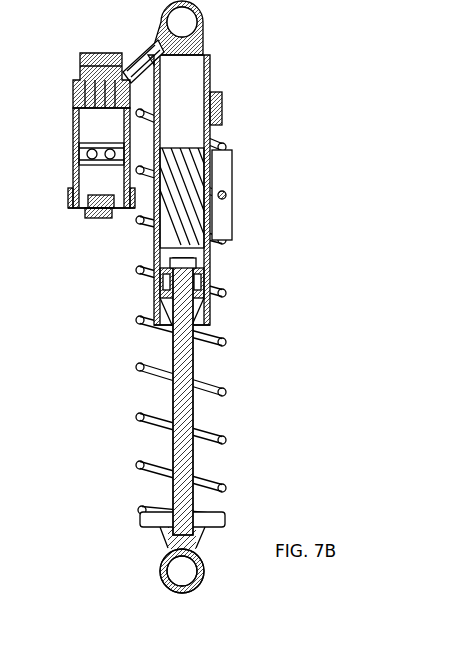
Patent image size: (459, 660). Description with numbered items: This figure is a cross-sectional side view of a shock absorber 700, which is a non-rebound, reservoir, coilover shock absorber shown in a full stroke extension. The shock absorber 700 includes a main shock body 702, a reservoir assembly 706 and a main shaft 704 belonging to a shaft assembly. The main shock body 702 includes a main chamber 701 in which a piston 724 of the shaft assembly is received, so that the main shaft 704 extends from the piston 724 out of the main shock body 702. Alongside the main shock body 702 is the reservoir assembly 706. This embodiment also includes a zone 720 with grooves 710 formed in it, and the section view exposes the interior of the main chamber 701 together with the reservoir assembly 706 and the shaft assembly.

The shock absorber 700 is at (288, 92).
The main chamber 701 is at (200, 79).
The main shock body 702 is at (207, 88).
The main shaft 704 is at (200, 403).
The reservoir assembly 706 is at (77, 137).
The grooves 710 is at (210, 207).
The zone 720 is at (226, 193).
The piston 724 is at (210, 293).